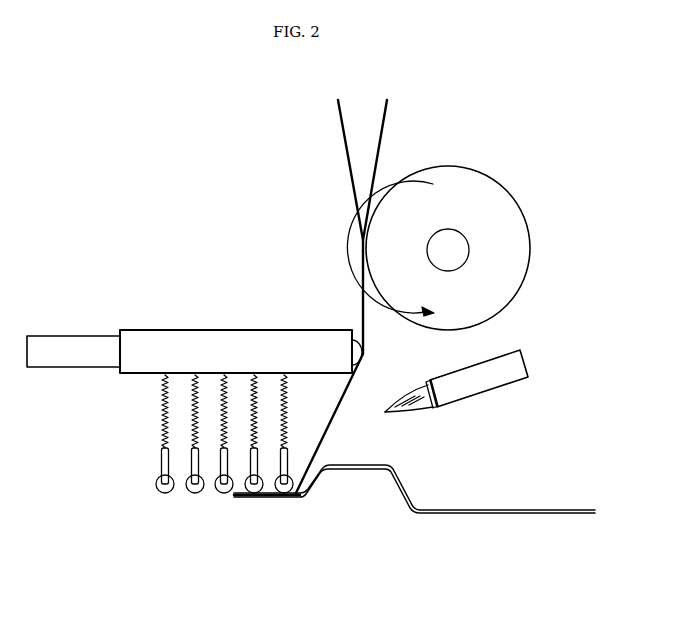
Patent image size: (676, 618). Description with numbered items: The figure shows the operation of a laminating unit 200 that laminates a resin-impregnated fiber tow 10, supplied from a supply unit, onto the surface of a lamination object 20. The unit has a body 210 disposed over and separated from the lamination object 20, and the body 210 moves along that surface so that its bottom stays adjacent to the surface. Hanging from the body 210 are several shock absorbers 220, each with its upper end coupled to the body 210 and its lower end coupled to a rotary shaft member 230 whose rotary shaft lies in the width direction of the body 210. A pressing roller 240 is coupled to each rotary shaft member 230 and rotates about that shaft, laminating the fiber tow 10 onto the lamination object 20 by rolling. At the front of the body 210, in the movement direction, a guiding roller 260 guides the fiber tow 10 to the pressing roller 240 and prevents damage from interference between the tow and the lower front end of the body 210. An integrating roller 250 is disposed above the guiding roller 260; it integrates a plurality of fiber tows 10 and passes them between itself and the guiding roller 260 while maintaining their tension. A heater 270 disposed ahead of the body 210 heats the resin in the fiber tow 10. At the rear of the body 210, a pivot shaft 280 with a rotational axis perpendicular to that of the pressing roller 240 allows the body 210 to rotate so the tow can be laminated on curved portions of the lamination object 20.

The fiber tow 10 is at (332, 422).
The lamination object 20 is at (273, 499).
The laminating unit 200 is at (284, 399).
The body 210 is at (207, 337).
The shock absorber 220 is at (150, 398).
The rotary shaft member 230 is at (158, 458).
The pressing roller 240 is at (195, 494).
The integrating roller 250 is at (503, 210).
The guiding roller 260 is at (357, 352).
The heater 270 is at (485, 387).
The pivot shaft 280 is at (67, 345).